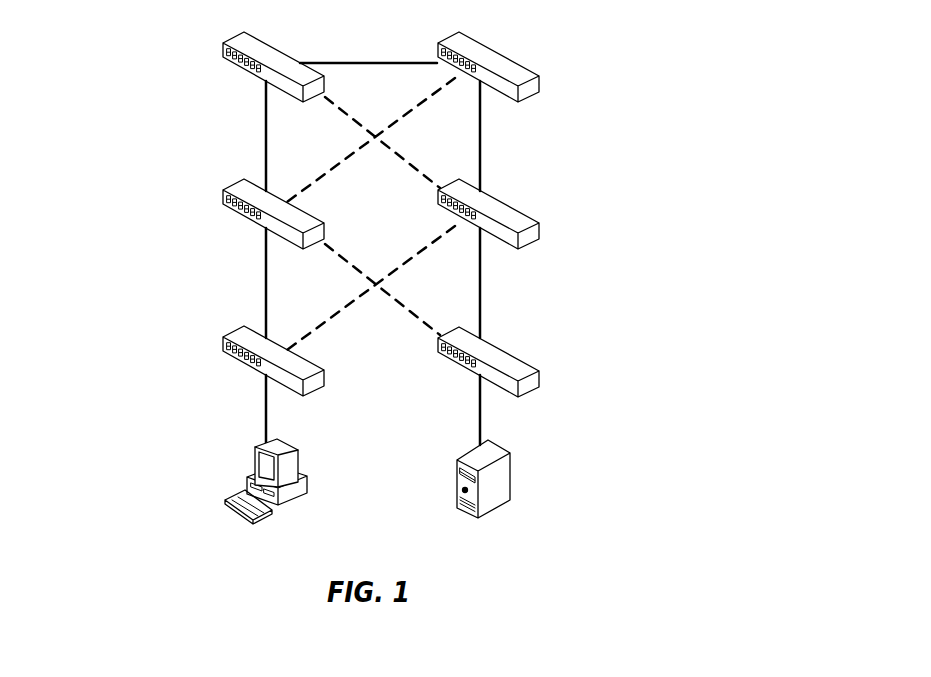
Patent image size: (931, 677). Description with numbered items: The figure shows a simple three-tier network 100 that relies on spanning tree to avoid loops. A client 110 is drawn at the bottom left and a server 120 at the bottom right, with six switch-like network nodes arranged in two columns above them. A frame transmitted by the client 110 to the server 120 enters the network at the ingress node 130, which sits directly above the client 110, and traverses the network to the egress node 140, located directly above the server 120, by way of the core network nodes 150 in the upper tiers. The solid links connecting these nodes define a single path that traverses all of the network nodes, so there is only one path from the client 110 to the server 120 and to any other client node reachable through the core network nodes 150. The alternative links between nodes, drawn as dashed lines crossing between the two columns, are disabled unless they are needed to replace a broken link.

The three-tier network 100 is at (98, 458).
The client 110 is at (298, 497).
The server 120 is at (510, 483).
The ingress node 130 is at (242, 367).
The egress node 140 is at (538, 382).
The core network nodes 150 is at (237, 35).